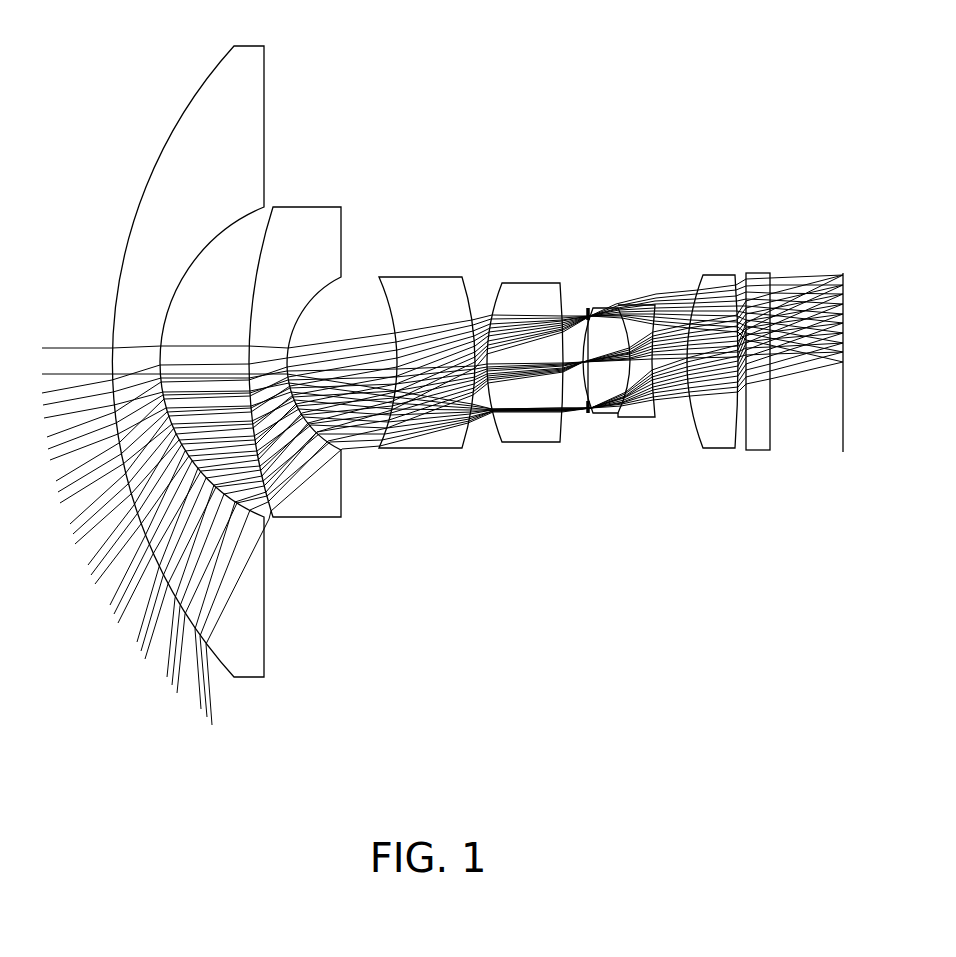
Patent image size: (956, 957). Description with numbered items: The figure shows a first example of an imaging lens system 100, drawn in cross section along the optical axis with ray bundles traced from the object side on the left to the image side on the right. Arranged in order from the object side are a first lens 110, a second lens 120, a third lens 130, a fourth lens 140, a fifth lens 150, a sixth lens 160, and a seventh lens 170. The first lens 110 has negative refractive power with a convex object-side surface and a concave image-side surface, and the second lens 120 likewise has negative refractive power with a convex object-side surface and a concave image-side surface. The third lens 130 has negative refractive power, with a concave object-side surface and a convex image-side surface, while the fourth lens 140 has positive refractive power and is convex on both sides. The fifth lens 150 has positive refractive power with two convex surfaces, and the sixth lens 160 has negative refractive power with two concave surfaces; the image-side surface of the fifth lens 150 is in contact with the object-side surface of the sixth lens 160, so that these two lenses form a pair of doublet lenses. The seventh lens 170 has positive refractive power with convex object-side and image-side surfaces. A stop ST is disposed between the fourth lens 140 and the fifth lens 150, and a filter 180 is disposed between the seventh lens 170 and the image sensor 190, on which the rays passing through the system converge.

The imaging lens system 100 is at (522, 126).
The first lens 110 is at (244, 670).
The second lens 120 is at (315, 507).
The third lens 130 is at (428, 443).
The fourth lens 140 is at (528, 440).
The fifth lens 150 is at (600, 415).
The sixth lens 160 is at (640, 415).
The seventh lens 170 is at (712, 448).
The filter 180 is at (758, 450).
The image sensor 190 is at (843, 452).
The stop ST is at (588, 308).